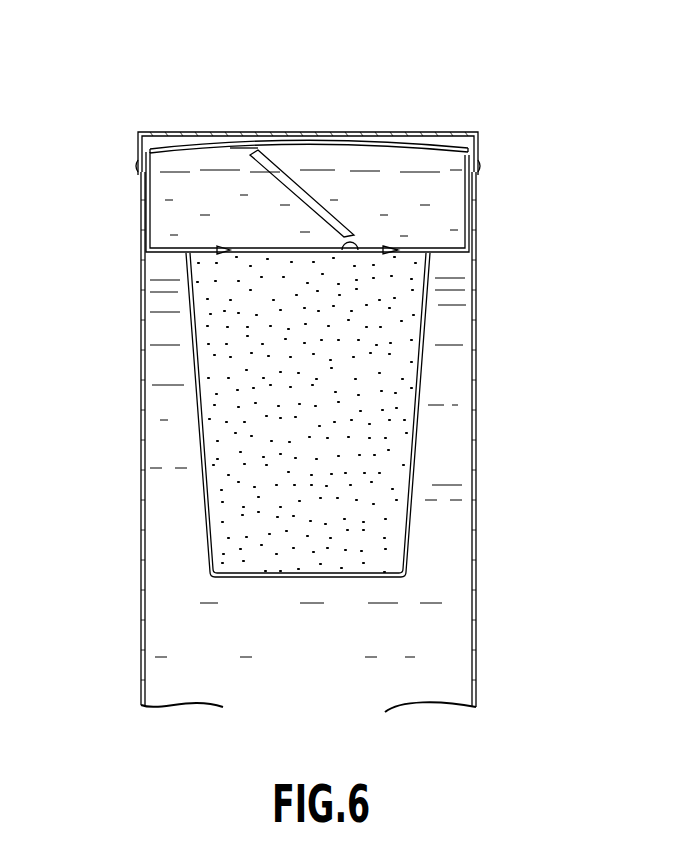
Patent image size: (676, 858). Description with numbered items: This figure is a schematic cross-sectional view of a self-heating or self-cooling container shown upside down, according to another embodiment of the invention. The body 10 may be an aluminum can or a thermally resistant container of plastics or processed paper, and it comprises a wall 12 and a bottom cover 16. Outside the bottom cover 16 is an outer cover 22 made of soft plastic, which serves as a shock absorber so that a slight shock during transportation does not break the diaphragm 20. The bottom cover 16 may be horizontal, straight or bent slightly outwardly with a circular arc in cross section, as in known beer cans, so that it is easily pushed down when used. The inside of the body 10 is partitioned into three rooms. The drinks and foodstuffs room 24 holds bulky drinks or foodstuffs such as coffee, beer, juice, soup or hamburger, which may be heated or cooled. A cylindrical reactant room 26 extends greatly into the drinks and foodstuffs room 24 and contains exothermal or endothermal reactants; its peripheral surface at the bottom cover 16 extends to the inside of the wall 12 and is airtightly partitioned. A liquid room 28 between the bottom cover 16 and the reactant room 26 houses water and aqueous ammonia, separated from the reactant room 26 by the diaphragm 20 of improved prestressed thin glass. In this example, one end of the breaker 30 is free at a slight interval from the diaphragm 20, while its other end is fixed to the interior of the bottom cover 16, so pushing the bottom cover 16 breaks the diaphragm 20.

The body 10 is at (353, 442).
The wall 12 is at (477, 598).
The bottom cover 16 is at (418, 142).
The diaphragm 20 is at (325, 252).
The outer cover 22 is at (205, 135).
The drinks and foodstuffs room 24 is at (185, 625).
The reactant room 26 is at (228, 492).
The liquid room 28 is at (175, 217).
The breaker 30 is at (343, 226).